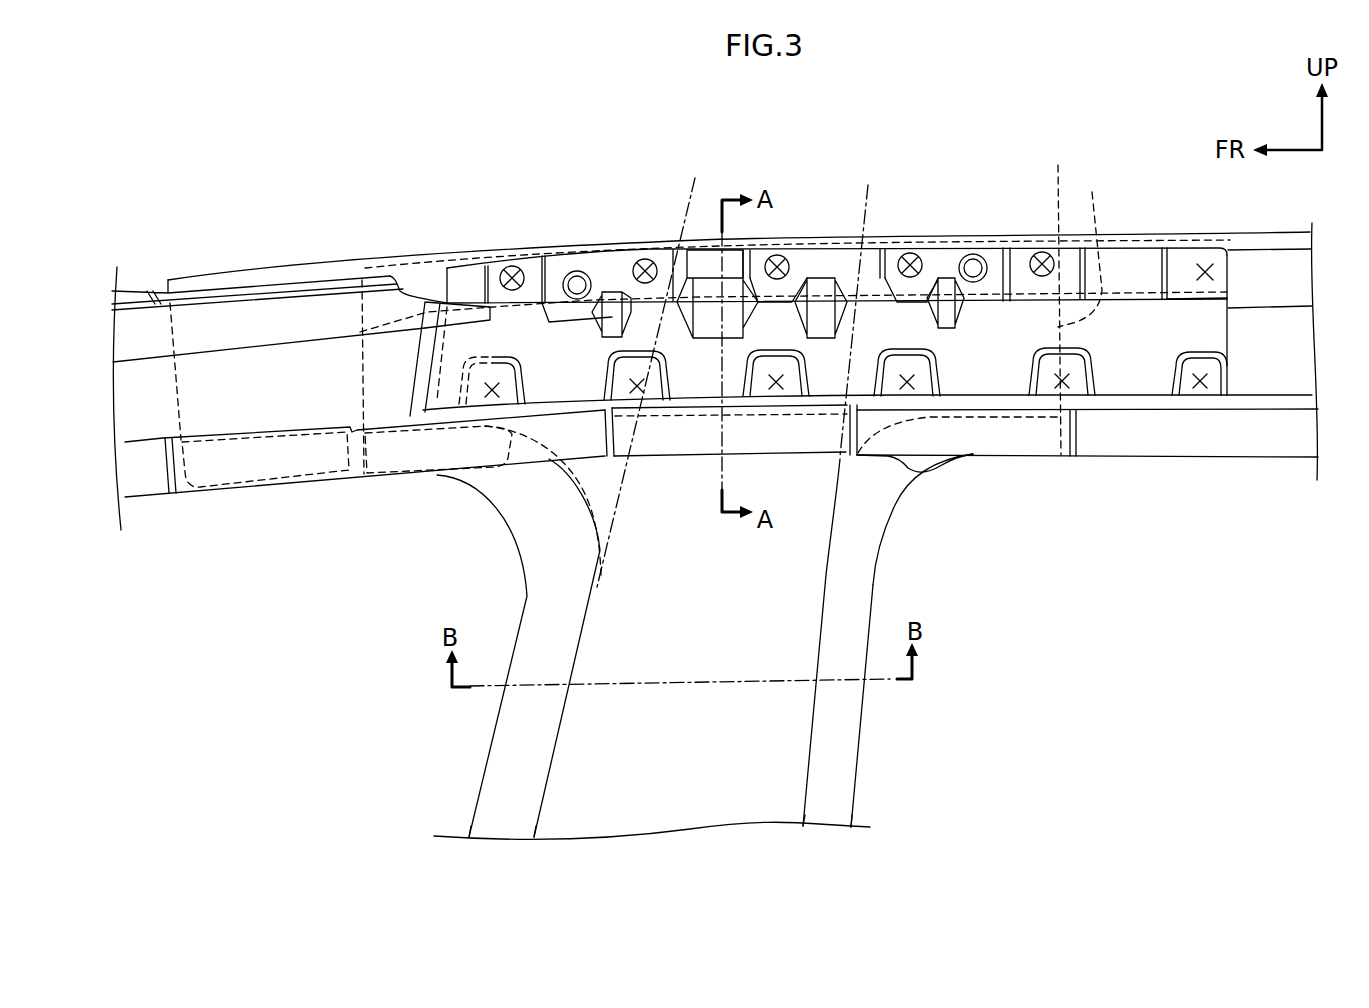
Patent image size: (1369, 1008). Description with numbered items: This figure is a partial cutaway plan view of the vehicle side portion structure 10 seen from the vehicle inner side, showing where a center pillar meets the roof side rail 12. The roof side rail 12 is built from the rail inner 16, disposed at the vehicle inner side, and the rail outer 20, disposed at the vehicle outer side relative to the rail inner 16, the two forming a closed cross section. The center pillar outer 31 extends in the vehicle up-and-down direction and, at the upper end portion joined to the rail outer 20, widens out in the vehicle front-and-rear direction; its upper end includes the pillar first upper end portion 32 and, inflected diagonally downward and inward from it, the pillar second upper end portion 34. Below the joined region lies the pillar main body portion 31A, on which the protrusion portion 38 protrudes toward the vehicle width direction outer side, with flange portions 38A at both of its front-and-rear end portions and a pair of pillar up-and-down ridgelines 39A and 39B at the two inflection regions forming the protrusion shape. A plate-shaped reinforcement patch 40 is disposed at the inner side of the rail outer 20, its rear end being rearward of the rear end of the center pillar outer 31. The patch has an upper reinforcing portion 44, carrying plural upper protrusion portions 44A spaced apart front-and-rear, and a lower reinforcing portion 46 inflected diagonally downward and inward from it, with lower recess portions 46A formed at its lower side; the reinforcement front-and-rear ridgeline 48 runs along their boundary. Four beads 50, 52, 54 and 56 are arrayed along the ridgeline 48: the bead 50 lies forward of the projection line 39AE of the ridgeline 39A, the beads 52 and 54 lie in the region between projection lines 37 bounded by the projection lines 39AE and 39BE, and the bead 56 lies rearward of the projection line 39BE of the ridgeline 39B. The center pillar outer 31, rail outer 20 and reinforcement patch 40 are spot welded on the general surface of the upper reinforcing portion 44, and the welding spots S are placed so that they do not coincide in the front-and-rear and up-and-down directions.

The vehicle roof structure 10 is at (483, 138).
The roof side rail 12 is at (297, 262).
The rail inner panel 16 is at (272, 467).
The rail outer reinforcement 20 is at (523, 471).
The center pillar outer 31 is at (902, 496).
The pillar main body portion 31A is at (857, 780).
The pillar first upper end portion 32 is at (1058, 296).
The pillar second upper end portion 34 is at (1083, 245).
The region between projection lines 37 is at (700, 172).
The protrusion portion 38 is at (668, 800).
The flange portions 38A is at (502, 818).
The pillar up-and-down ridgeline 39A is at (562, 740).
The projection line 39AE is at (690, 193).
The pillar up-and-down ridgeline 39B is at (806, 737).
The projection line 39BE is at (872, 190).
The reinforcement patch 40 is at (1126, 238).
The upper reinforcing portion 44 is at (1212, 283).
The upper protrusion portions 44A is at (1135, 270).
The lower reinforcing portion 46 is at (1212, 333).
The lower recess portions 46A is at (1079, 384).
The reinforcement front-and-rear ridgeline 48 is at (1180, 299).
The bead 50 is at (606, 340).
The bead 52 is at (705, 342).
The bead 54 is at (821, 342).
The bead 56 is at (946, 331).
The spots S is at (514, 265).